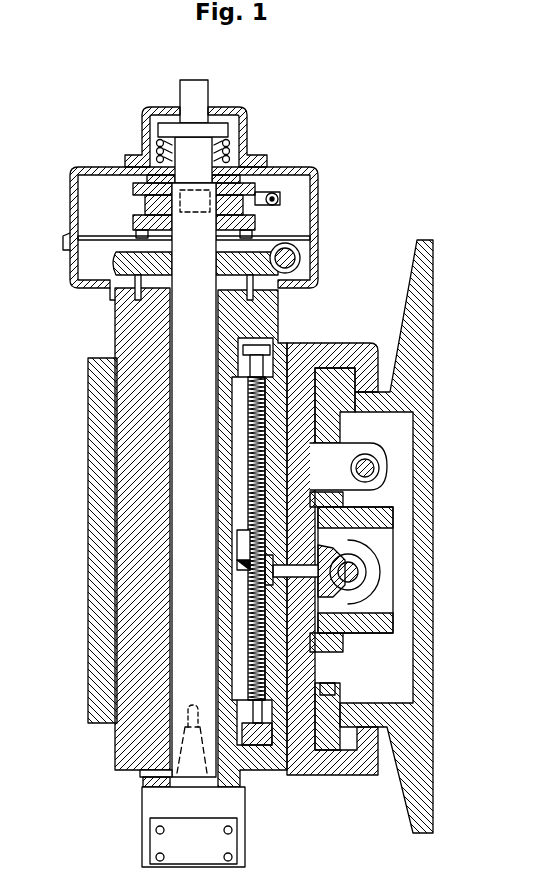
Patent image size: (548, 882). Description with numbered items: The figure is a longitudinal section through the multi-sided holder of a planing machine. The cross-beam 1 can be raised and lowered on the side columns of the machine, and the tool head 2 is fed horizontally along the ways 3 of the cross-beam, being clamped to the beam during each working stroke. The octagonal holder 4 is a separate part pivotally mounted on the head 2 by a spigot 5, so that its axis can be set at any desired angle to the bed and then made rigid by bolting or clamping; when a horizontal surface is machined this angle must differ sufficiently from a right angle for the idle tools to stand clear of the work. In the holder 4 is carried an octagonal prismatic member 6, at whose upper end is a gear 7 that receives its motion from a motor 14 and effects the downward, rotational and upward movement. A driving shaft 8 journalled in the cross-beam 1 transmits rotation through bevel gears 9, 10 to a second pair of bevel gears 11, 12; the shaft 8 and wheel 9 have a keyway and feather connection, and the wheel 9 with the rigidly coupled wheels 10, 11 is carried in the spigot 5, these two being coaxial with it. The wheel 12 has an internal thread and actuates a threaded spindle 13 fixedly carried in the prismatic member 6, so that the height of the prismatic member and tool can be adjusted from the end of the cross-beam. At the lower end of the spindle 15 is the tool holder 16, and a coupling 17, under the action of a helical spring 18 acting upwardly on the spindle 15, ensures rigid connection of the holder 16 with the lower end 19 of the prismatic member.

The cross-beam 1 is at (421, 285).
The tool head 2 is at (350, 355).
The ways 3 is at (330, 428).
The octagonal holder 4 is at (102, 397).
The spigot 5 is at (370, 519).
The octagonal prismatic member 6 is at (138, 435).
The gear 7 is at (118, 213).
The driving shaft 8 is at (352, 572).
The bevel gear 9 is at (364, 587).
The bevel gear 10 is at (330, 590).
The bevel gear 11 is at (270, 577).
The bevel gear 12 is at (247, 560).
The threaded spindle 13 is at (253, 460).
The motor 14 is at (283, 308).
The spindle 15 is at (205, 668).
The tool holder 16 is at (188, 838).
The coupling 17 is at (140, 782).
The helical spring 18 is at (228, 140).
The lower end of the prismatic member 19 is at (147, 773).